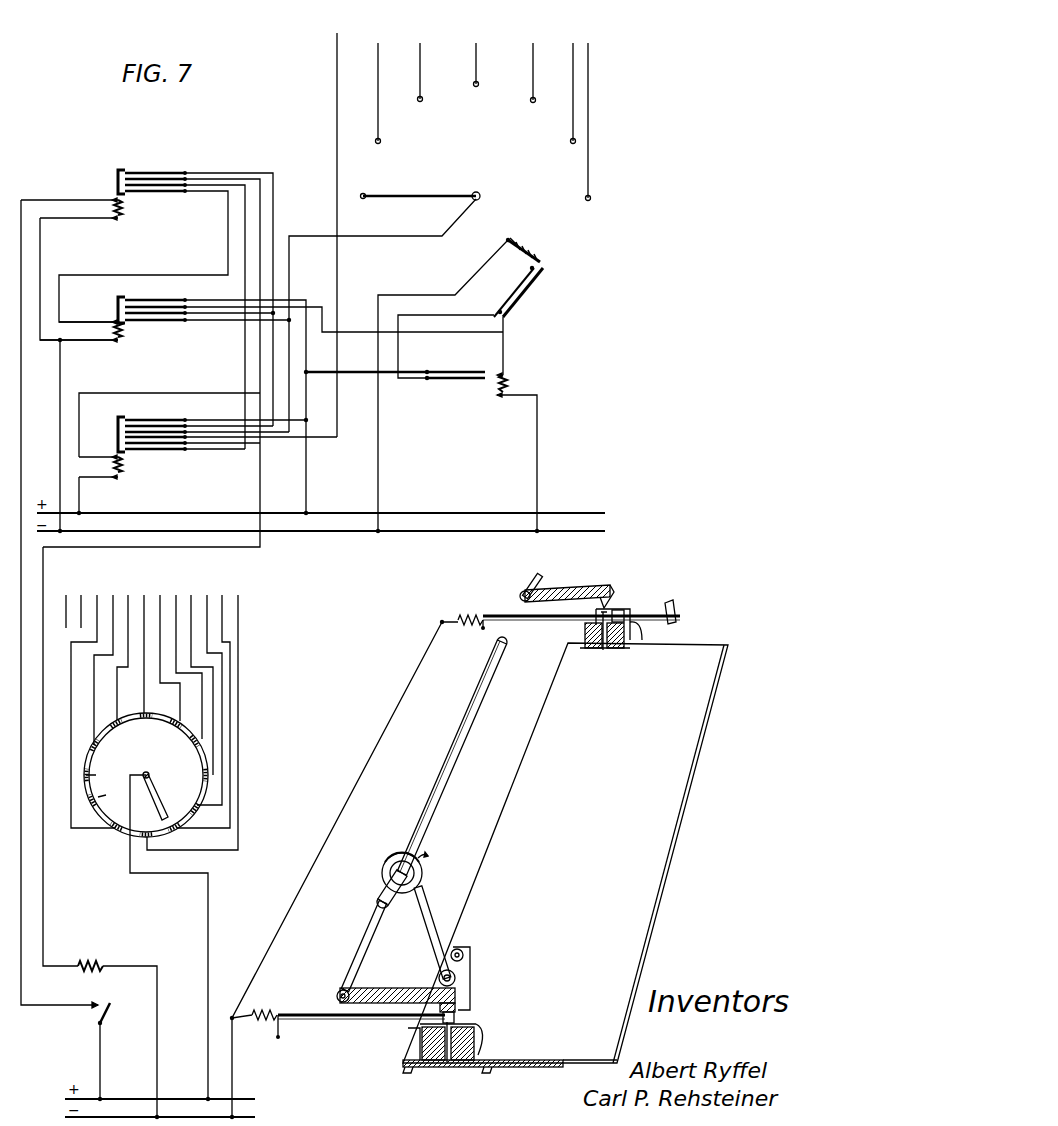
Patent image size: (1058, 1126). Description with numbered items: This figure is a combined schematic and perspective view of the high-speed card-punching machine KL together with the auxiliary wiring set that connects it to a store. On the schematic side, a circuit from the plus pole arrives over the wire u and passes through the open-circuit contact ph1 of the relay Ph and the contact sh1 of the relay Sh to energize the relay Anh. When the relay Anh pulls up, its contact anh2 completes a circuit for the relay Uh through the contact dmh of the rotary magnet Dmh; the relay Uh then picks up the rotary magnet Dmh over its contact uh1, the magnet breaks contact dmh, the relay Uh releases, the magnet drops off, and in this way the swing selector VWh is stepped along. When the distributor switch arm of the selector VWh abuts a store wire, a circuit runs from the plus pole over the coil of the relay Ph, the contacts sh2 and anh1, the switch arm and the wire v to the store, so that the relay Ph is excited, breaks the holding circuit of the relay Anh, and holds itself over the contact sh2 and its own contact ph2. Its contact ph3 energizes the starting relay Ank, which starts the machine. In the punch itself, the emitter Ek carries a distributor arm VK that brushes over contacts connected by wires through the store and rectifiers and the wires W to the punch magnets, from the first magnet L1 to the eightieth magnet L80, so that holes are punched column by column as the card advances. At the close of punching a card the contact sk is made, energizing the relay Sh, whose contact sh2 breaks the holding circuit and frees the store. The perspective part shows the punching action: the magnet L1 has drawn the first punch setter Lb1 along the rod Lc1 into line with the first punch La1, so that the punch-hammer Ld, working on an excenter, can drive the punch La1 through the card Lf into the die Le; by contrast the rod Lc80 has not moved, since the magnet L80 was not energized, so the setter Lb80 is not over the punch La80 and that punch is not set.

The wire u is at (334, 232).
The wire v is at (376, 85).
The distributing selector VWh is at (448, 198).
The relay Sh is at (124, 213).
The contact sh1 is at (142, 196).
The contact sh2 is at (140, 170).
The relay Anh is at (124, 336).
The contact anh1 is at (140, 323).
The contact anh2 is at (140, 298).
The relay Ph is at (124, 472).
The contact ph1 is at (140, 448).
The contact ph2 is at (140, 432).
The contact ph3 is at (140, 418).
The rotary magnet Dmh is at (538, 250).
The contact dmh is at (545, 282).
The relay Uh is at (505, 384).
The contact uh1 is at (472, 376).
The emitter Ek is at (148, 724).
The distributor arm VK is at (168, 808).
The starting relay Ank is at (101, 955).
The contact sk is at (96, 1008).
The high-speed card-punching machine KL is at (479, 868).
The punch-hammer Ld is at (575, 596).
The punch magnet L80 is at (470, 605).
The rod Lc80 is at (548, 620).
The punch setter Lb80 is at (620, 606).
The punch La80 is at (603, 650).
The wires W is at (383, 837).
The punch magnet L1 is at (258, 1008).
The rod Lc1 is at (325, 1022).
The punch setter Lb1 is at (440, 1026).
The punch La1 is at (445, 1063).
The die Le is at (408, 1072).
The card Lf is at (550, 1068).